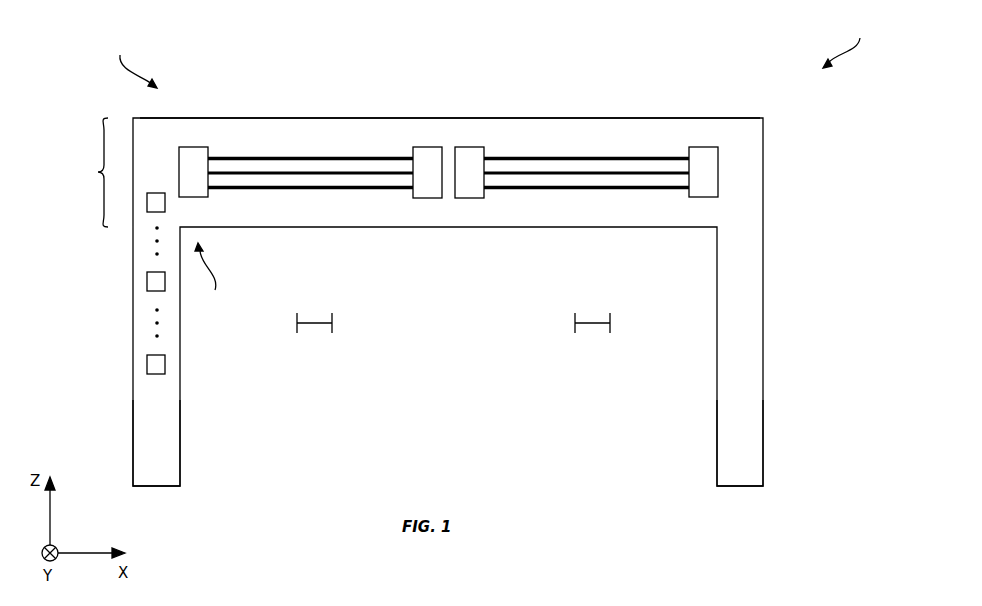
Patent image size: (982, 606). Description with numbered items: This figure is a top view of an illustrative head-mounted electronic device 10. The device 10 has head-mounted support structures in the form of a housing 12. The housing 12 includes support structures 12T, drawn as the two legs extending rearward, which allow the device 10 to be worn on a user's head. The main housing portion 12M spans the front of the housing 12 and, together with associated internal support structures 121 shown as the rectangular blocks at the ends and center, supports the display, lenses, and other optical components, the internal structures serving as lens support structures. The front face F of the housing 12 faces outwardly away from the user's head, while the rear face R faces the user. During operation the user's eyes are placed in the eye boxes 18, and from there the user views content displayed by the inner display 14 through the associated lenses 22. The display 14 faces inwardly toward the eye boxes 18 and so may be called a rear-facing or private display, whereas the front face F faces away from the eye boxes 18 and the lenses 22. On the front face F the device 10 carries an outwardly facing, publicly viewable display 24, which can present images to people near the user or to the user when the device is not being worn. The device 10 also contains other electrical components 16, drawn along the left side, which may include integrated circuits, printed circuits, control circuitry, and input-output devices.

The electronic device 10 is at (847, 42).
The housing 12 is at (766, 170).
The main housing portion 12M is at (83, 172).
The support structures 12T is at (147, 440).
The end supports 121 is at (192, 147).
The display 14 is at (284, 157).
The lenses 22 is at (317, 178).
The display 24 is at (602, 118).
The electrical components 16 is at (147, 364).
The eye boxes 18 is at (312, 325).
The front face F is at (136, 62).
The rear face R is at (208, 276).